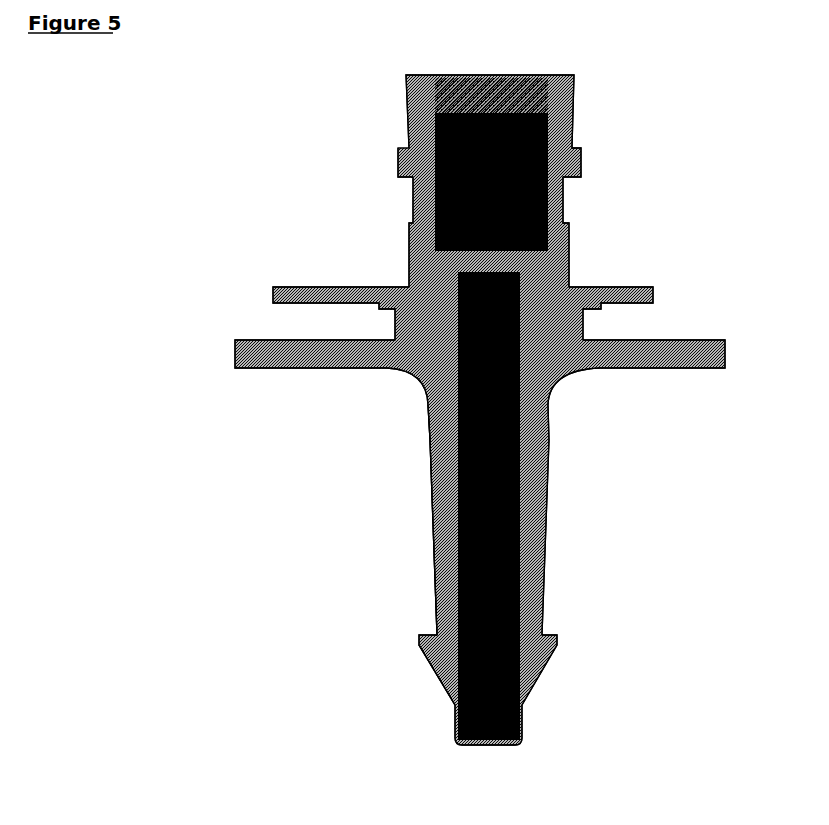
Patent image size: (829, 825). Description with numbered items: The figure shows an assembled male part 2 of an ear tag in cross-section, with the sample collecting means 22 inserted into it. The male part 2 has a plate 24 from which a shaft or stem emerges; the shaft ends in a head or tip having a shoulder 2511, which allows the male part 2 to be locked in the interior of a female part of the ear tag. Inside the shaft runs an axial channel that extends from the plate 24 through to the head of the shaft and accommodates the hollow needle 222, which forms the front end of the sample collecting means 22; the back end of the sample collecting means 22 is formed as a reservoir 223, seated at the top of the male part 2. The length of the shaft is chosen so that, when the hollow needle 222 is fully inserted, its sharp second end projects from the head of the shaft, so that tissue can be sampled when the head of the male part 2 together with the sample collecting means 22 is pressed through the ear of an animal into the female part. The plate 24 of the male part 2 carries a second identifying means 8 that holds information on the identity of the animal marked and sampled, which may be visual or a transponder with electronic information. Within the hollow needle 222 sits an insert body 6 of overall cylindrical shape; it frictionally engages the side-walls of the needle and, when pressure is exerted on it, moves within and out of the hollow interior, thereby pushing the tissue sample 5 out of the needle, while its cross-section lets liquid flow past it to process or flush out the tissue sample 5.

The male part 2 is at (655, 63).
The back end of sample collecting means or reservoir 223 is at (636, 150).
The sample collecting means 22 is at (582, 239).
The plate 24 is at (607, 365).
The second identifying means 8 is at (280, 368).
The insert body 6 is at (433, 522).
The front end of sample collecting means or hollow needle 222 is at (545, 594).
The shoulder of distal end 2511 is at (560, 635).
The tissue sample 5 is at (433, 670).